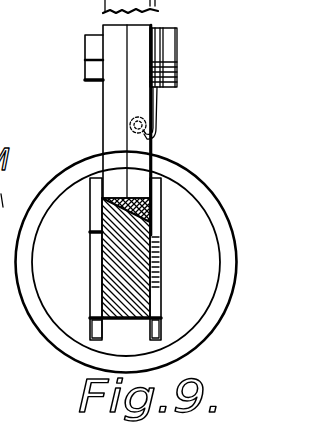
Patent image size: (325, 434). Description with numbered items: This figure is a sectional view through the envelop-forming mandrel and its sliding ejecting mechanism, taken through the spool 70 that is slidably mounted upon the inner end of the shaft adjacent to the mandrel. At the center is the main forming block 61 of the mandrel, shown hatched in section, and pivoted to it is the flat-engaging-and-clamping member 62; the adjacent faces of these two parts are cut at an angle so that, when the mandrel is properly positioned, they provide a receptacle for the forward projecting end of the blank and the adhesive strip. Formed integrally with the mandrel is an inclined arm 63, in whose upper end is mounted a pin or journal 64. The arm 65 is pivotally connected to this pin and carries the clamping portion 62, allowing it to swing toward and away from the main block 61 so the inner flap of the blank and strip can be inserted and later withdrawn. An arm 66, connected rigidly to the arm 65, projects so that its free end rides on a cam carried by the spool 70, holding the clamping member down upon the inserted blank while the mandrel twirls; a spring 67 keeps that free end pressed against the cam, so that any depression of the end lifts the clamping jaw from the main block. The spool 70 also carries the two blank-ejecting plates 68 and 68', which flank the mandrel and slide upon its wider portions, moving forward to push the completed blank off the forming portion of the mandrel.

The main forming block 61 is at (118, 295).
The flat-engaging-and-clamping member 62 is at (152, 192).
The inclined arm 63 is at (108, 106).
The pin or journal 64 is at (100, 60).
The arm 65 is at (140, 147).
The arm 66 is at (147, 126).
The spring 67 is at (160, 97).
The blank-ejecting plate 68 is at (72, 259).
The blank-ejecting plate 68' is at (184, 259).
The spool 70 is at (36, 300).